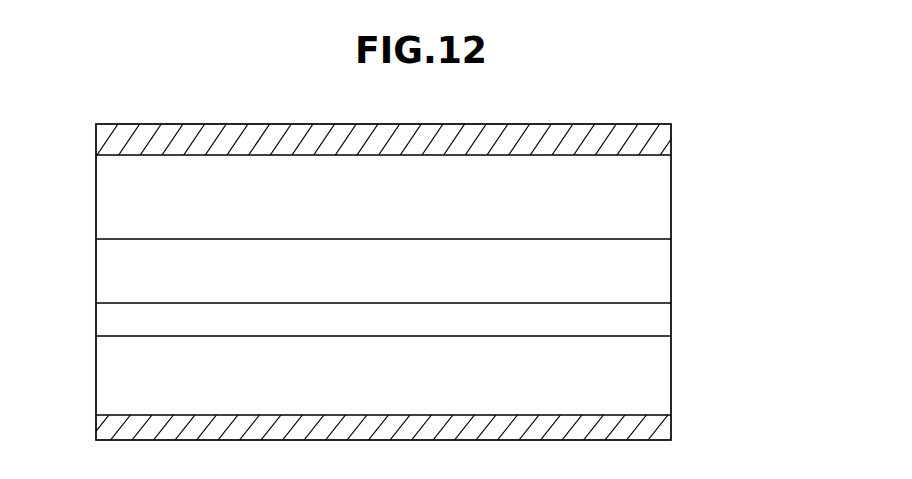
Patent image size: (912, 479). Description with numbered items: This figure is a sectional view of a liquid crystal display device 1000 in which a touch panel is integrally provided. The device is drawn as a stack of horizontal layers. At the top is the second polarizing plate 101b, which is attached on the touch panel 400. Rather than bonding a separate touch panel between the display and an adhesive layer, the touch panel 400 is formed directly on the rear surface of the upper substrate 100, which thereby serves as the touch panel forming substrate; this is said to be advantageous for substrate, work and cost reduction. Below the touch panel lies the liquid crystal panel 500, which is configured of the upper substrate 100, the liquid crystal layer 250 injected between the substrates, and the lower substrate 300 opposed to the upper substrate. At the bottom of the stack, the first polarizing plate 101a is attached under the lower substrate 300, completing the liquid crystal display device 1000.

The liquid crystal display device 1000 is at (422, 283).
The second polarizing plate 101b is at (668, 136).
The touch panel 400 is at (667, 185).
The liquid crystal panel 500 is at (383, 327).
The upper substrate 100 is at (667, 270).
The liquid crystal layer 250 is at (667, 323).
The lower substrate 300 is at (667, 387).
The first polarizing plate 101a is at (408, 428).